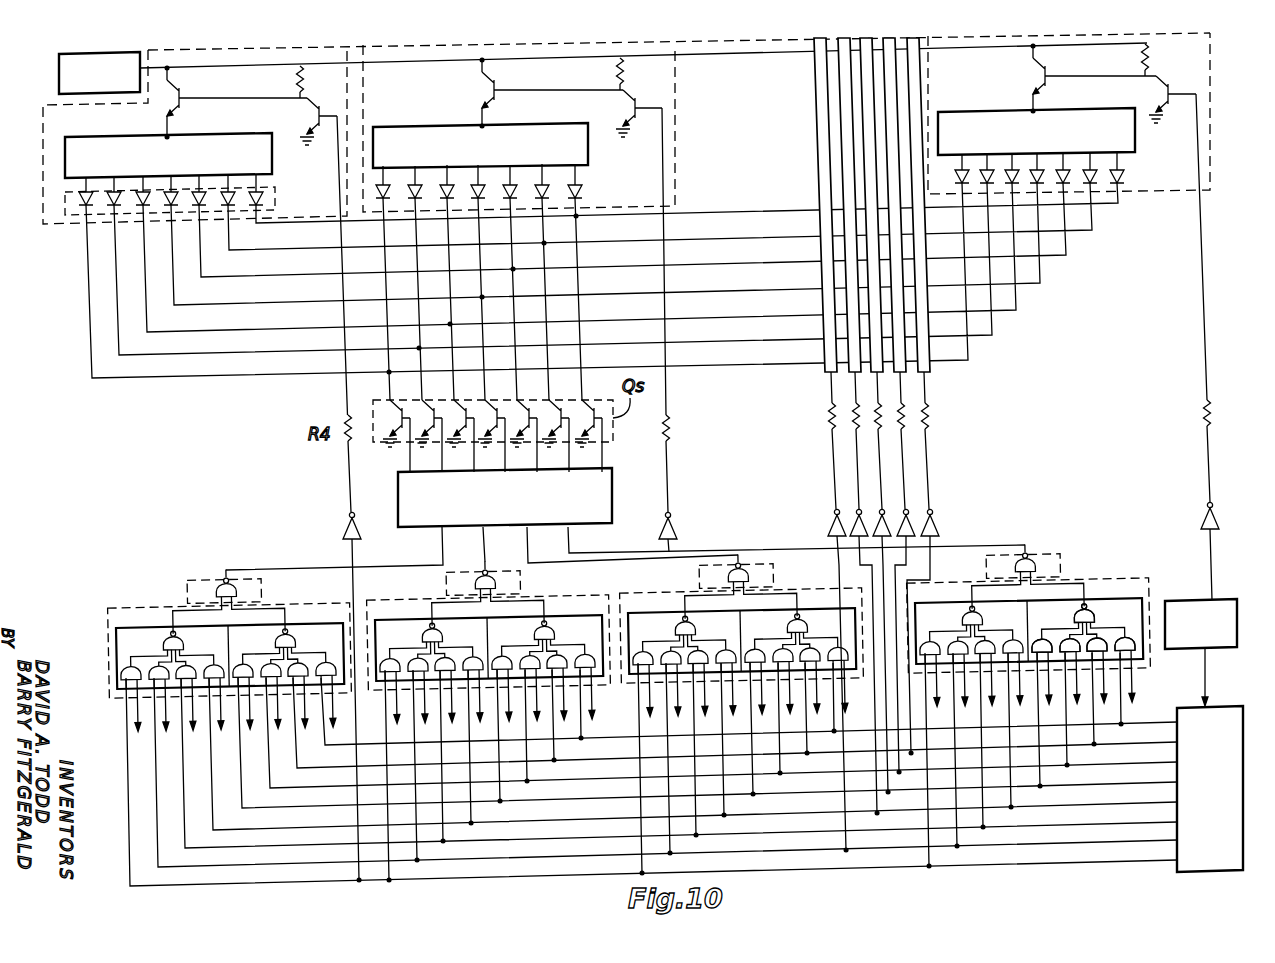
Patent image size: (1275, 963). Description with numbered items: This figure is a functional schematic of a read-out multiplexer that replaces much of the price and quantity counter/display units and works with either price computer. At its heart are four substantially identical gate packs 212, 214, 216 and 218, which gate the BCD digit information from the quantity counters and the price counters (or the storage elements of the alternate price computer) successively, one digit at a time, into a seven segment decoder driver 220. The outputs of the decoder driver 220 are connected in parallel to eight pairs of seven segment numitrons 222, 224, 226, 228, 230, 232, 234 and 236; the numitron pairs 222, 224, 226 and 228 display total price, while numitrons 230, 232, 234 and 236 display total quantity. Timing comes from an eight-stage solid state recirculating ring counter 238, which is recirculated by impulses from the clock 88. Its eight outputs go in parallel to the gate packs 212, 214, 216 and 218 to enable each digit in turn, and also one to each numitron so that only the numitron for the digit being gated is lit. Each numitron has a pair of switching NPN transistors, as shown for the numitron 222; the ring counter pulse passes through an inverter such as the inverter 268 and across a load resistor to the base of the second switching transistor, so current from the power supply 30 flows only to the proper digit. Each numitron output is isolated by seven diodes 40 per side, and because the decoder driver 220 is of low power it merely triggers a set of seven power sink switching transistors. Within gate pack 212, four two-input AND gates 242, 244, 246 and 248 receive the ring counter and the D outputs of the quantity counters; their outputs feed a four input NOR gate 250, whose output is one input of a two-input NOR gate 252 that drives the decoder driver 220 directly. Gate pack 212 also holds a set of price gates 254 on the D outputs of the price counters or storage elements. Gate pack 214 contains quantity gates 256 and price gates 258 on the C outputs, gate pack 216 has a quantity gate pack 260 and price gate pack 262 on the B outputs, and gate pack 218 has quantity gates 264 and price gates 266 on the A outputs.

The power supply 30 is at (59, 75).
The segment diodes 40 is at (65, 197).
The seven segment numitron 222 is at (174, 158).
The seven segment numitron 224 is at (676, 119).
The seven segment numitron 236 is at (1195, 195).
The seven segment numitron 226 is at (828, 373).
The seven segment numitron 228 is at (850, 373).
The seven segment numitron 230 is at (882, 373).
The seven segment numitron 232 is at (905, 373).
The seven segment numitron 234 is at (930, 372).
The seven segment decoder driver 220 is at (612, 490).
The inverter 268 is at (350, 528).
The gate pack 218 is at (190, 584).
The gate pack 216 is at (448, 590).
The gate pack 214 is at (741, 556).
The gate pack 212 is at (995, 558).
The price gates 266 is at (122, 632).
The quantity gates 264 is at (330, 627).
The price gate pack 262 is at (380, 628).
The quantity gate pack 260 is at (590, 620).
The price gates 258 is at (650, 614).
The quantity gates 256 is at (838, 616).
The price gates 254 is at (932, 608).
The two-input AND gate 242 is at (1136, 644).
The two-input AND gate 246 is at (1086, 606).
The two-input AND gate 248 is at (1070, 640).
The two-input NOR gate 252 is at (1044, 640).
The four input NOR gate 250 is at (1097, 640).
The two-input AND gate 244 is at (1124, 640).
The clock 88 is at (1207, 658).
The eight-stage solid state recirculating ring counter 238 is at (1190, 706).